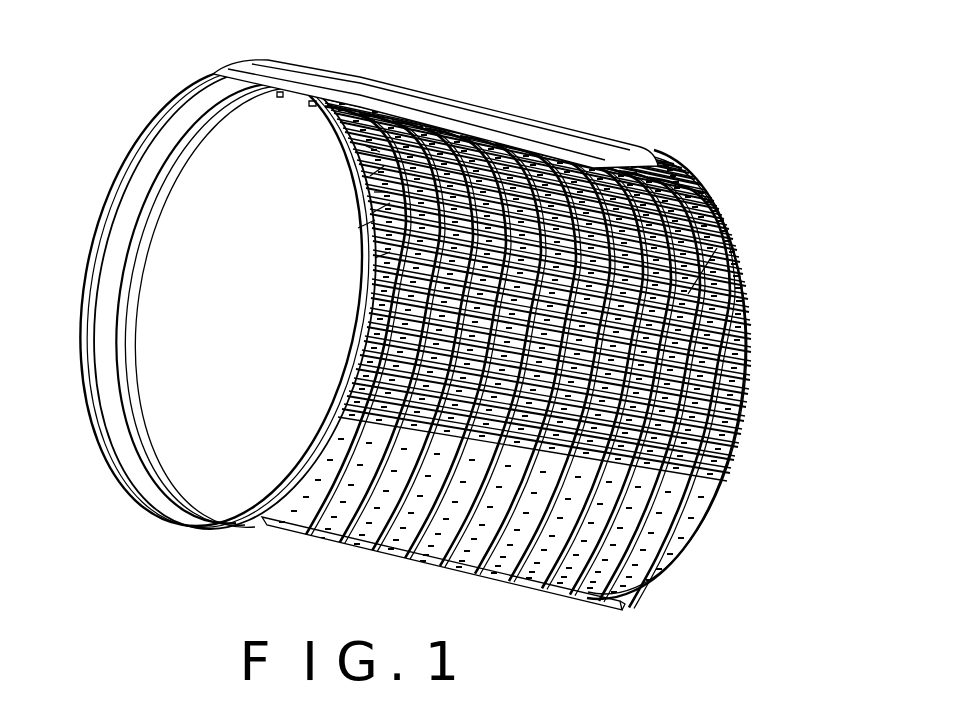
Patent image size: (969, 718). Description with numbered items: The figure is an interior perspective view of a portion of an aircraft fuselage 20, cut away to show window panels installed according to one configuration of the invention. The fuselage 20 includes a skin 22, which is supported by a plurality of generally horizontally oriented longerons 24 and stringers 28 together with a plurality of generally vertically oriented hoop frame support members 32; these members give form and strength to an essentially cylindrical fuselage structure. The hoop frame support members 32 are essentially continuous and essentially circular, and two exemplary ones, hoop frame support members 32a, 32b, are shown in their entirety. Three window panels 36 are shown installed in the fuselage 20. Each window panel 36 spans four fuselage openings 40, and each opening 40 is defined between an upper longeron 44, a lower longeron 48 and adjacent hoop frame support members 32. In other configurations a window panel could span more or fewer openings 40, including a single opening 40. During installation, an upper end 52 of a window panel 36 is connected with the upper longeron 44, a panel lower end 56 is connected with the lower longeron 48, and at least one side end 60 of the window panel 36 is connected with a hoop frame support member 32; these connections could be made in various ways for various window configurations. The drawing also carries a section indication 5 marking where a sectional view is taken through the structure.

The fuselage 20 is at (788, 413).
The skin 22 is at (486, 106).
The longerons 24 is at (757, 302).
The stringers 28 is at (733, 442).
The hoop frame support members 32 is at (552, 598).
The hoop frame support member 32a is at (166, 112).
The hoop frame support member 32b is at (132, 430).
The window panels 36 is at (374, 212).
The fuselage openings 40 is at (670, 270).
The upper longeron 44 is at (372, 172).
The lower longeron 48 is at (360, 228).
The upper end 52 is at (366, 149).
The panel lower end 56 is at (377, 257).
The side end 60 is at (376, 192).
The section line 5- 5 is at (723, 240).